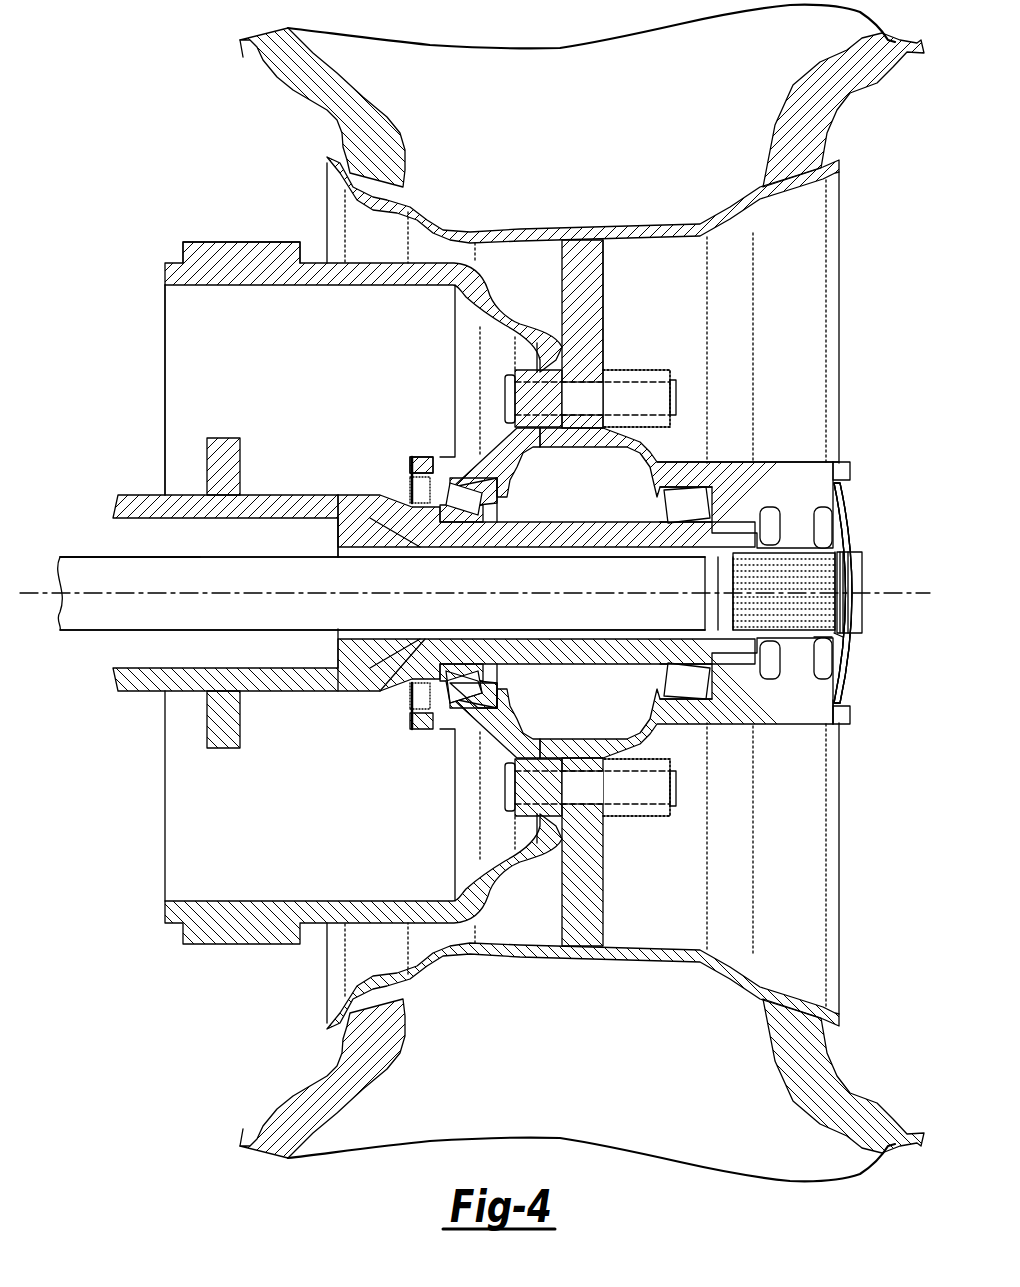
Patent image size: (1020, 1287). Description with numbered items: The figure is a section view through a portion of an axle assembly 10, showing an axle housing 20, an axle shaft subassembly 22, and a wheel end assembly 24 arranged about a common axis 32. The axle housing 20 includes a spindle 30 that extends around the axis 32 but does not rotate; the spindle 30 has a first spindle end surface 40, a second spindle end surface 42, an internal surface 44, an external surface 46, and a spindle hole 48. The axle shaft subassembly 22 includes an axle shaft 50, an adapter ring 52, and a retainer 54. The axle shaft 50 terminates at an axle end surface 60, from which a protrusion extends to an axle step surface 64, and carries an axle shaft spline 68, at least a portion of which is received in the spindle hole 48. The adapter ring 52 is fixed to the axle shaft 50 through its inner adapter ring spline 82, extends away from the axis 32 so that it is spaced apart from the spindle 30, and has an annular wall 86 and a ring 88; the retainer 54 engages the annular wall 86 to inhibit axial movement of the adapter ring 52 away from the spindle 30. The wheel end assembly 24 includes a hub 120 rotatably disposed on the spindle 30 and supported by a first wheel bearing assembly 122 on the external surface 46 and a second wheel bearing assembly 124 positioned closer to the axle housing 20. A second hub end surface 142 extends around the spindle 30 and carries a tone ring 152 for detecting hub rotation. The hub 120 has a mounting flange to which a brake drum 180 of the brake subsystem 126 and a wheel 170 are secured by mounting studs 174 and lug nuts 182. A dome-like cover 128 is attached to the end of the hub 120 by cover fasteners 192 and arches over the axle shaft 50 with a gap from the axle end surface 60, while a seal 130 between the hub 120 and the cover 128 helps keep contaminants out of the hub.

The axle assembly 10 is at (130, 265).
The axle housing 20 is at (190, 495).
The axle shaft subassembly 22 is at (62, 612).
The wheel end assembly 24 is at (787, 300).
The spindle 30 is at (577, 523).
The axis 32 is at (470, 590).
The first spindle end surface 40 is at (763, 525).
The second spindle end surface 42 is at (338, 495).
The internal surface 44 is at (355, 668).
The external surface 46 is at (370, 692).
The spindle hole 48 is at (350, 546).
The axle shaft 50 is at (100, 557).
The adapter ring 52 is at (800, 695).
The retainer 54 is at (848, 556).
The axle end surface 60 is at (843, 573).
The axle step surface 64 is at (830, 613).
The axle shaft spline 68 is at (740, 612).
The inner adapter ring spline 82 is at (835, 670).
The annular wall 86 is at (830, 558).
The ring 88 is at (845, 637).
The hub 120 is at (793, 462).
The first wheel bearing assembly 122 is at (640, 670).
The second wheel bearing assembly 124 is at (520, 690).
The brake subsystem 126 is at (263, 960).
The cover 128 is at (851, 517).
The seal 130 is at (840, 463).
The second hub end surface 142 is at (410, 477).
The tone ring 152 is at (416, 457).
The wheel 170 is at (603, 297).
The mounting stud 174 is at (677, 397).
The brake drum 180 is at (262, 243).
The lug nut 182 is at (630, 370).
The cover fastener 192 is at (852, 470).